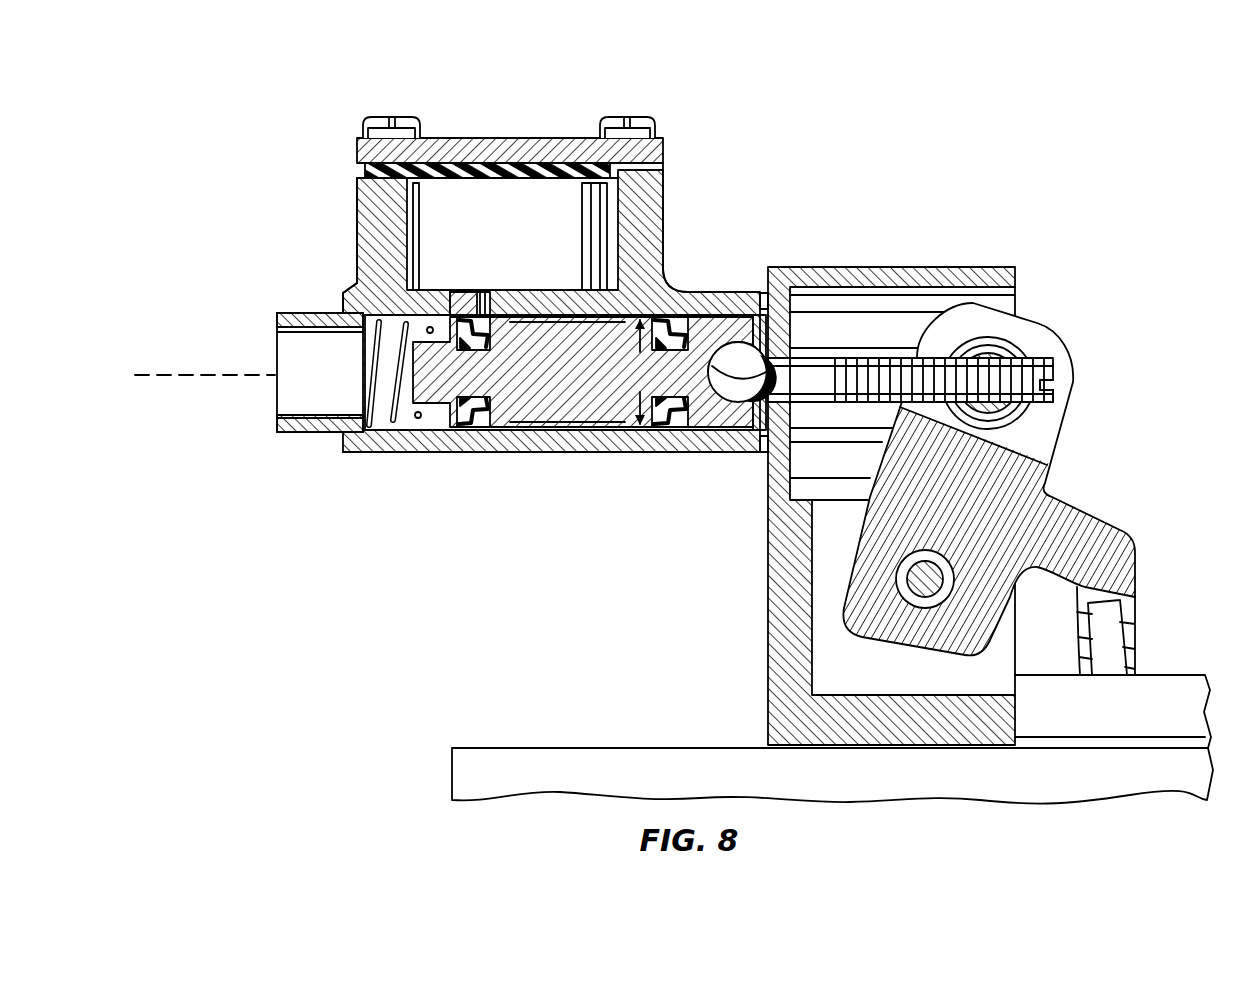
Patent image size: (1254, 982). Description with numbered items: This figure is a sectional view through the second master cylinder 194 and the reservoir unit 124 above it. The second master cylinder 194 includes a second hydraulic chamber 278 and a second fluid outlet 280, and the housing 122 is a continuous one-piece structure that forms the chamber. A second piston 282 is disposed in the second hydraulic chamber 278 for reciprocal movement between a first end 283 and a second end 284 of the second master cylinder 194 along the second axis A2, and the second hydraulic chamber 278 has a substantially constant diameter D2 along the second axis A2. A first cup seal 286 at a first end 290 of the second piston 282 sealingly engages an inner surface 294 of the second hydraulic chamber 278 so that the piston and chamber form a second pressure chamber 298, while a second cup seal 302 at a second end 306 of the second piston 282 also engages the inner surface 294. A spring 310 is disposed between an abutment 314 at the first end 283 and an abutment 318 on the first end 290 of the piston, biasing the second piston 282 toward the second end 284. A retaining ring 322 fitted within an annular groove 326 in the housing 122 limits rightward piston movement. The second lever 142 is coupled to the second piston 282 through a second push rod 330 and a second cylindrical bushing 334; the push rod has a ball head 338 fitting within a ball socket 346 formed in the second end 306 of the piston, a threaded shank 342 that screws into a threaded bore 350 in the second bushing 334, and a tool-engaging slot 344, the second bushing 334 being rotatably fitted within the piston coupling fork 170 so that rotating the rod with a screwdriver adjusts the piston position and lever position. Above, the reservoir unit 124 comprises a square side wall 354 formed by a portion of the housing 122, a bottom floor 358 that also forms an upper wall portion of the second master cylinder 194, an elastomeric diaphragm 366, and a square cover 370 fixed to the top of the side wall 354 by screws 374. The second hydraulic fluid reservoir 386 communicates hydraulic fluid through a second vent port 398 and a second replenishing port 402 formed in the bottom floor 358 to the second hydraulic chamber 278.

The reservoir unit 124 is at (311, 200).
The screws 374 is at (371, 117).
The square cover 370 is at (445, 150).
The elastomeric diaphragm 366 is at (497, 170).
The square side wall 354 is at (652, 200).
The second hydraulic fluid reservoir 386 is at (535, 224).
The bottom floor 358 is at (588, 288).
The housing 122 is at (773, 250).
The abutment 318 is at (372, 275).
The spring 310 is at (348, 290).
The abutment 314 is at (337, 313).
The second vent (inlet) port 398 is at (452, 312).
The second replenishing port 402 is at (493, 312).
The annular groove 326 is at (766, 305).
The retaining ring 322 is at (735, 305).
The ball socket 346 is at (783, 352).
The second push rod 330 is at (910, 311).
The threaded shank 342 is at (936, 370).
The second cylindrical bushing 334 is at (990, 355).
The piston coupling fork 170 is at (1037, 333).
The second fluid outlet 280 is at (276, 343).
The second axis A2 is at (227, 375).
The second pressure chamber 298 is at (317, 397).
The tool-engaging slot 344 is at (1055, 386).
The threaded bore 350 is at (1050, 404).
The inner surface 294 is at (340, 418).
The first end 283 is at (360, 453).
The first end 290 is at (432, 383).
The first cup seal 286 is at (474, 428).
The second hydraulic chamber 278 is at (565, 455).
The second piston 282 is at (621, 453).
The second cup seal 302 is at (677, 453).
The ball head 338 is at (734, 395).
The second master cylinder 194 is at (509, 460).
The second end 284 is at (713, 453).
The second end 306 is at (710, 437).
The second lever 142 is at (1133, 512).
The diameter D2 is at (640, 372).